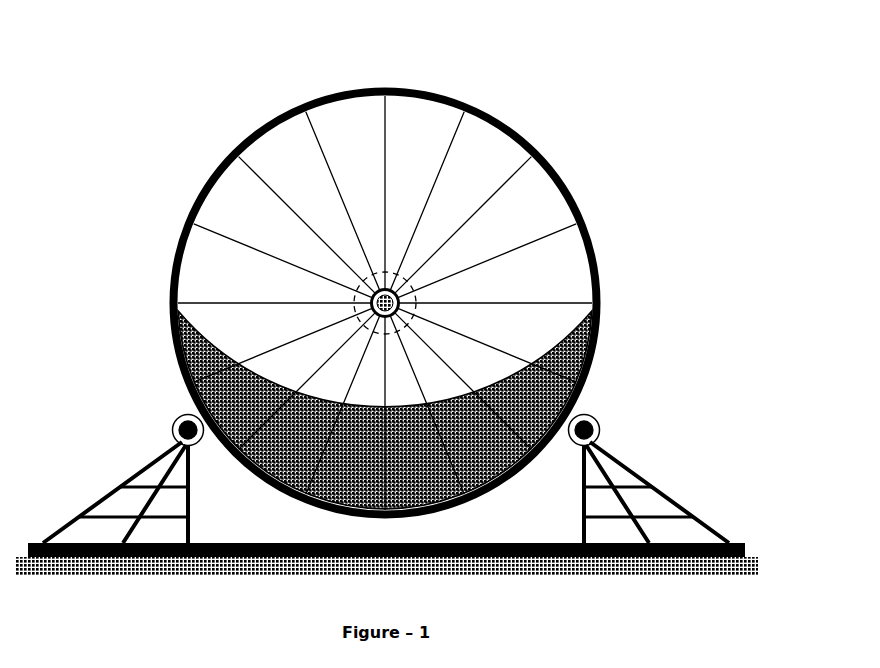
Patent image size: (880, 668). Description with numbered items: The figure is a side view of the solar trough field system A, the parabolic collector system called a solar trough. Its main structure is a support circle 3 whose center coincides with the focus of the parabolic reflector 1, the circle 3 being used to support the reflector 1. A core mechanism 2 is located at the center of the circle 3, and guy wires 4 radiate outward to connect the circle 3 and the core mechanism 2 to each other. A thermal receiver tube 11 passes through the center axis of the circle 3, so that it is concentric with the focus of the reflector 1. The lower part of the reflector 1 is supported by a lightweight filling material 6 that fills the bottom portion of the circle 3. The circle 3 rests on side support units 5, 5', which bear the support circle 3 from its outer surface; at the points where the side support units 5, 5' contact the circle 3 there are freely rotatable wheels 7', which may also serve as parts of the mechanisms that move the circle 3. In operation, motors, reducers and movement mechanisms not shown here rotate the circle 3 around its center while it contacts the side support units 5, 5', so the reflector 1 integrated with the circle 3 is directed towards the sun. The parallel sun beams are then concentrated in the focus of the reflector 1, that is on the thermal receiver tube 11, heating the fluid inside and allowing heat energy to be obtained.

The solar trough field system A is at (640, 115).
The parabolic reflector 1 is at (200, 306).
The core mechanism 2 is at (381, 283).
The support circle 3 is at (513, 130).
The guy wire 4 is at (433, 177).
The side support unit 5 is at (115, 469).
The side support unit 5' is at (668, 473).
The lightweight filling material 6 is at (490, 467).
The freely rotatable wheel 7' is at (393, 395).
The thermal receiver tube 11 is at (375, 290).